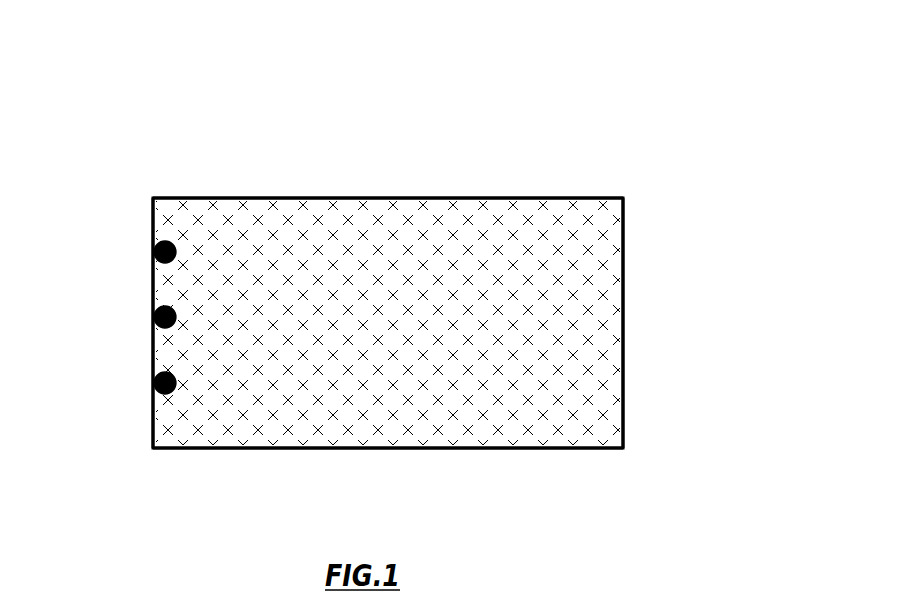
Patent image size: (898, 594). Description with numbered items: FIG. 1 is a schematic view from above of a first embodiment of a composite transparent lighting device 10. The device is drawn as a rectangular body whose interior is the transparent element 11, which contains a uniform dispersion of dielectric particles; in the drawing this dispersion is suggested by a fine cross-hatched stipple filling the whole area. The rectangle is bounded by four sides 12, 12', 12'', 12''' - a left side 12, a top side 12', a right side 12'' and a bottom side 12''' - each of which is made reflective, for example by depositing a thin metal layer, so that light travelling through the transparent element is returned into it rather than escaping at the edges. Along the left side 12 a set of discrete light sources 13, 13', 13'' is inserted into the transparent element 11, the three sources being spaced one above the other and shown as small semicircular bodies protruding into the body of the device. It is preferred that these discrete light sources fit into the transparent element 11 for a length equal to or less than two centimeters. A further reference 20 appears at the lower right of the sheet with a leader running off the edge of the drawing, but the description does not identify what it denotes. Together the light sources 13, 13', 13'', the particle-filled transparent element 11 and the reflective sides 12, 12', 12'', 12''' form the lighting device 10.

The composite transparent lighting device 10 is at (630, 173).
The transparent element 11 is at (472, 283).
The side 12 is at (128, 373).
The side 12' is at (388, 154).
The side 12'' is at (681, 323).
The side 12''' is at (388, 491).
The discrete light source 13 is at (109, 400).
The discrete light source 13' is at (97, 314).
The discrete light source 13'' is at (122, 213).
The adjacent component 20 is at (788, 592).